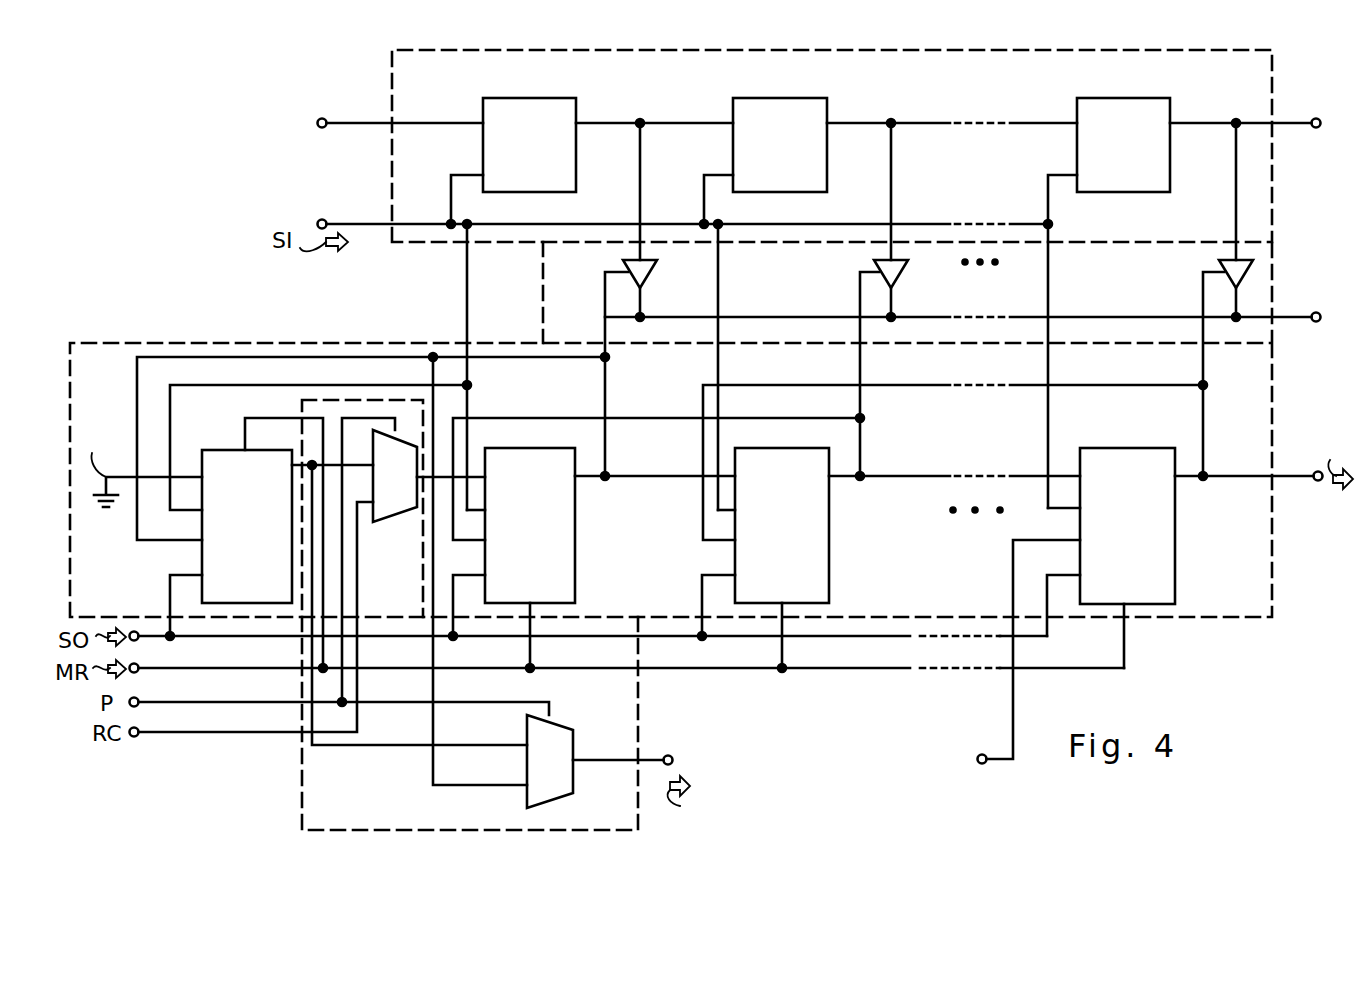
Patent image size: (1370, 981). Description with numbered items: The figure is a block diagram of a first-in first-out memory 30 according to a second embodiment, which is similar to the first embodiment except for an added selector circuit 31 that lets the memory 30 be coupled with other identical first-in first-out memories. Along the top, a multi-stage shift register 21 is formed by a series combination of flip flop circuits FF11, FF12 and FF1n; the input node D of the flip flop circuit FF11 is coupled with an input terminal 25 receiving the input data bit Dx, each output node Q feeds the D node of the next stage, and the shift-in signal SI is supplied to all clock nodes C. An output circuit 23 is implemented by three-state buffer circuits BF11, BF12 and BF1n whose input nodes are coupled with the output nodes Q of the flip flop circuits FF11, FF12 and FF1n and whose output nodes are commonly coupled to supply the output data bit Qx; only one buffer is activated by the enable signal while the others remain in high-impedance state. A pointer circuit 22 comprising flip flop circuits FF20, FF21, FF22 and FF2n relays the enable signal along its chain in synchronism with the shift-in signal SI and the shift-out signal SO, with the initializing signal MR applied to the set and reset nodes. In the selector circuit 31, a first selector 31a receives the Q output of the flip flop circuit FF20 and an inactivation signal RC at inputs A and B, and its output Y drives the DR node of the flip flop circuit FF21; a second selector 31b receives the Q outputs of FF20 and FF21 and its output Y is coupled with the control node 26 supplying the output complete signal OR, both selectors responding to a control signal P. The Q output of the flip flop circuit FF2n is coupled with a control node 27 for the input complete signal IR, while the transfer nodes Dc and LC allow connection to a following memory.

The multi-stage shift register 21 is at (1194, 50).
The pointer circuit 22 is at (1270, 563).
The output circuit 23 is at (1272, 280).
The input terminal 25 is at (325, 119).
The control node 26 is at (668, 760).
The control node 27 is at (1316, 472).
The first-in first-out memory 30 is at (1322, 36).
The selector circuit 31 is at (298, 762).
The first selector 31a is at (392, 522).
The second selector 31b is at (560, 793).
The flip flop circuit FF11 is at (575, 102).
The flip flop circuit FF12 is at (827, 102).
The flip flop circuit FF1n is at (1130, 98).
The flip flop circuit FF20 is at (213, 450).
The flip flop circuit FF21 is at (575, 547).
The flip flop circuit FF22 is at (829, 549).
The flip flop circuit FF2n is at (1175, 555).
The three-state buffer circuit BF11 is at (648, 264).
The three-state buffer circuit BF12 is at (900, 264).
The three-state buffer circuit BF1n is at (1218, 263).